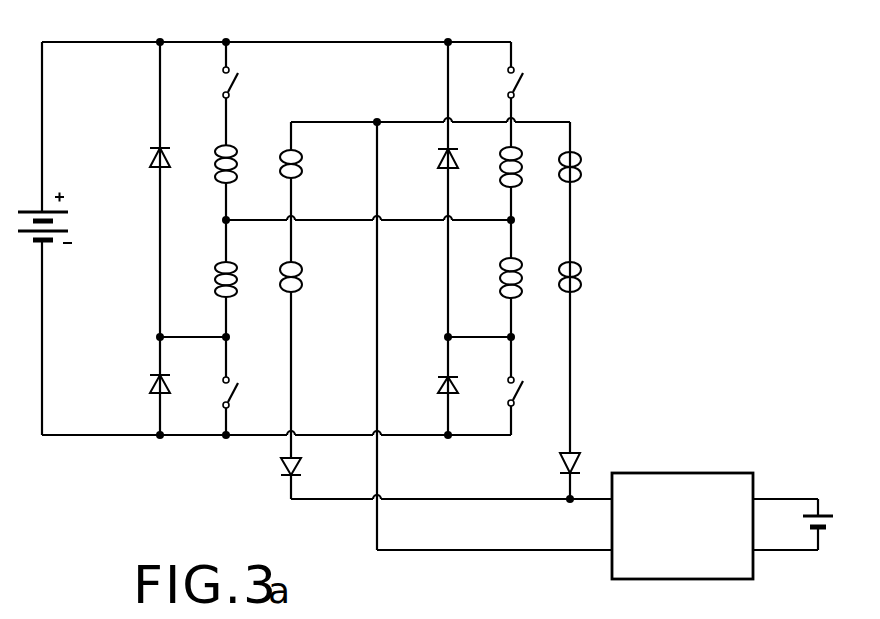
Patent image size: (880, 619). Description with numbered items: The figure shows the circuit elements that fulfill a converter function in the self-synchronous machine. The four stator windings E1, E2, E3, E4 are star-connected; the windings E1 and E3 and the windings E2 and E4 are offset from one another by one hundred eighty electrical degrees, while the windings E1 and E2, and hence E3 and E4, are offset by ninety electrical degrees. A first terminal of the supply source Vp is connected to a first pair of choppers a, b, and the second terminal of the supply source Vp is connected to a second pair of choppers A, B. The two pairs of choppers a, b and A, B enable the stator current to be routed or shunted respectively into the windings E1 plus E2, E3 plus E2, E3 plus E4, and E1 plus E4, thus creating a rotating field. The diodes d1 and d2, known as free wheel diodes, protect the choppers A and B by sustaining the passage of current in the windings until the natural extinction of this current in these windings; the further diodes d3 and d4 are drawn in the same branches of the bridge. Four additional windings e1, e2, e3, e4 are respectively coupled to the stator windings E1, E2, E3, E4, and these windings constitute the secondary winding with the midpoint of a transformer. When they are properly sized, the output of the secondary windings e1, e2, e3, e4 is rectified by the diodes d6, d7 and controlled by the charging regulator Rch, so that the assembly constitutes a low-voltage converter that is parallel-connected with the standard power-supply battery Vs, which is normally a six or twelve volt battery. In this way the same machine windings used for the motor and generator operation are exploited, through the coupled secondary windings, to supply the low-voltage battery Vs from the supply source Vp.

The supply source Vp is at (63, 219).
The free wheel diode d1 is at (145, 238).
The free wheel diode d2 is at (433, 238).
The diode d3 is at (145, 388).
The diode d4 is at (433, 388).
The rectifying diode d6 is at (307, 459).
The rectifying diode d7 is at (554, 310).
The stator winding E1 is at (242, 182).
The stator winding E2 is at (242, 278).
The stator winding E3 is at (527, 183).
The stator winding E4 is at (527, 278).
The secondary winding e1 is at (306, 192).
The secondary winding e2 is at (306, 348).
The secondary winding e3 is at (586, 168).
The secondary winding e4 is at (586, 278).
The chopper a is at (238, 93).
The chopper b is at (523, 94).
The chopper A is at (239, 386).
The chopper B is at (524, 386).
The charging regulator Rch is at (673, 472).
The standard power-supply battery Vs is at (799, 526).